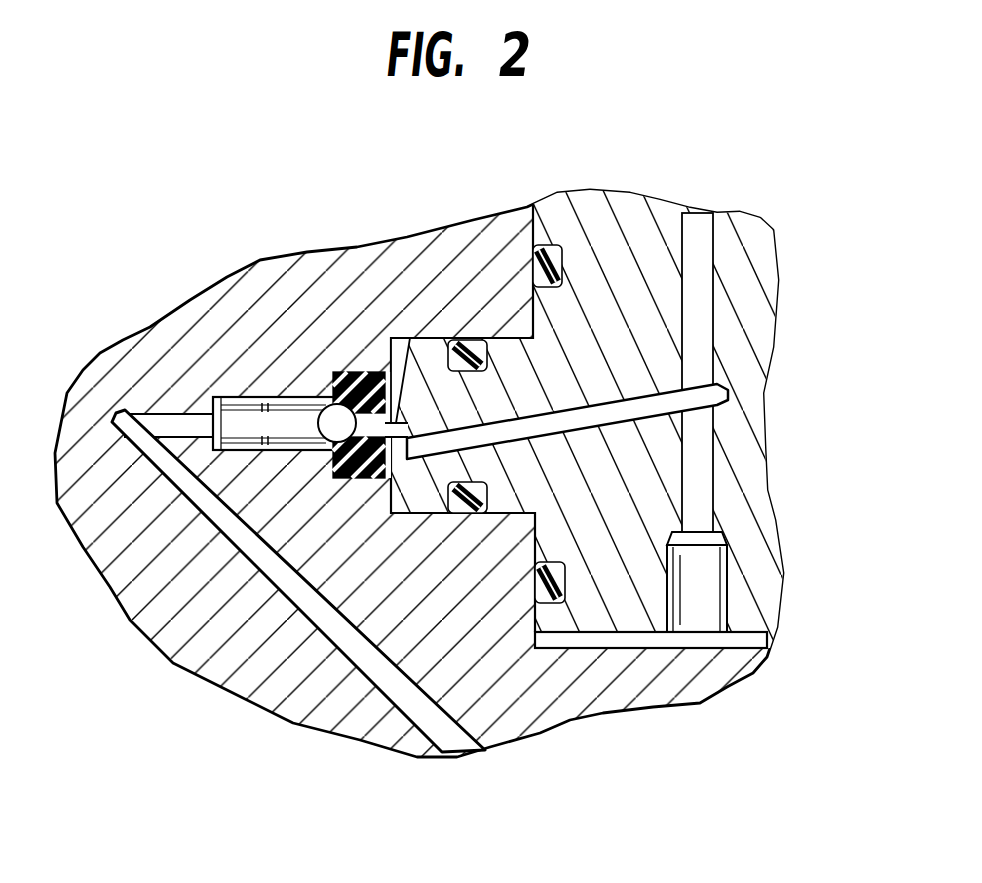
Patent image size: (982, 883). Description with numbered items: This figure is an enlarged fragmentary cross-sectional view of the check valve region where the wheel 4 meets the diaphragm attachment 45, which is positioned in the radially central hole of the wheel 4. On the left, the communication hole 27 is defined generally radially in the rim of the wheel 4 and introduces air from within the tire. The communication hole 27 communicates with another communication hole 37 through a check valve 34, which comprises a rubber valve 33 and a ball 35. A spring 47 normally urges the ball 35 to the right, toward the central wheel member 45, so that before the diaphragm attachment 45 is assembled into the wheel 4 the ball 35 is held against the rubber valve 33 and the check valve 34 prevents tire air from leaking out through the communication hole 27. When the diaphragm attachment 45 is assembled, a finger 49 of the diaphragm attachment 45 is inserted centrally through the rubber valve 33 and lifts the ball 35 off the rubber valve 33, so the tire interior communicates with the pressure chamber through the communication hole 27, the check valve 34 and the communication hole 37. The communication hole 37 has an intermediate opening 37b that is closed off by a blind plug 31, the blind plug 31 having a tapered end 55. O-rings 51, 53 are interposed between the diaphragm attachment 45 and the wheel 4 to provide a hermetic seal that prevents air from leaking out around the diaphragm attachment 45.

The wheel 4 is at (652, 708).
The communication hole 27 is at (377, 662).
The blind plug 31 is at (707, 602).
The rubber valve 33 is at (362, 372).
The check valve 34 is at (337, 297).
The ball 35 is at (328, 413).
The communication hole 37 is at (633, 410).
The intermediate opening 37b is at (718, 648).
The diaphragm attachment 45 is at (762, 283).
The spring 47 is at (232, 400).
The finger 49 is at (398, 422).
The O-ring 51 is at (462, 515).
The O-ring 53 is at (546, 245).
The tapered end 55 is at (728, 540).